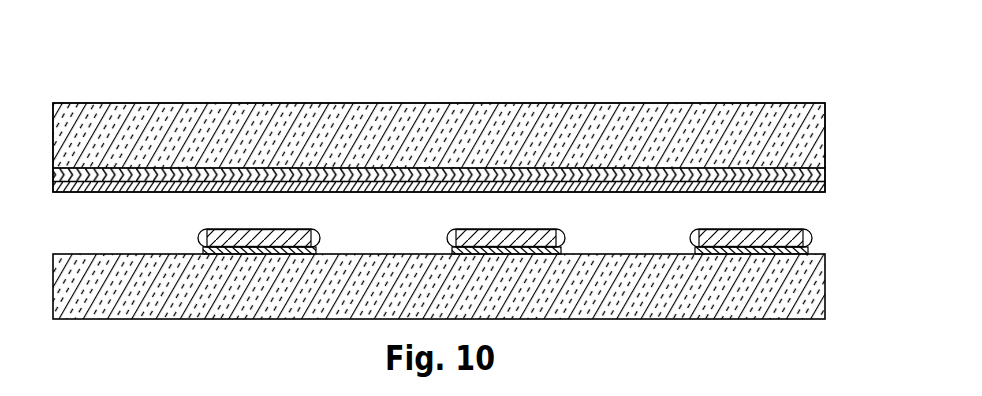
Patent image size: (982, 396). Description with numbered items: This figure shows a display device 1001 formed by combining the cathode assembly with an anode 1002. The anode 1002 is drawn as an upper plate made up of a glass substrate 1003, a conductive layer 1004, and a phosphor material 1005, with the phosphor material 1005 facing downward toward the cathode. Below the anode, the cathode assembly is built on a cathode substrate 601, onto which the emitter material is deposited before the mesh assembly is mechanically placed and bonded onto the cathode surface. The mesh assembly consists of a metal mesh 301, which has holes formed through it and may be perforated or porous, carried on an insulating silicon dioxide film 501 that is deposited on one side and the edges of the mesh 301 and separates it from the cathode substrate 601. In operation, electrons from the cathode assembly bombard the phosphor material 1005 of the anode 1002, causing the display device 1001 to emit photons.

The display device 1001 is at (482, 118).
The anode 1002 is at (482, 138).
The glass substrate 1003 is at (642, 103).
The conductive layer 1004 is at (826, 174).
The phosphor material 1005 is at (825, 185).
The metal mesh 301 is at (802, 229).
The silicon dioxide film 501 is at (809, 249).
The cathode substrate 601 is at (834, 299).